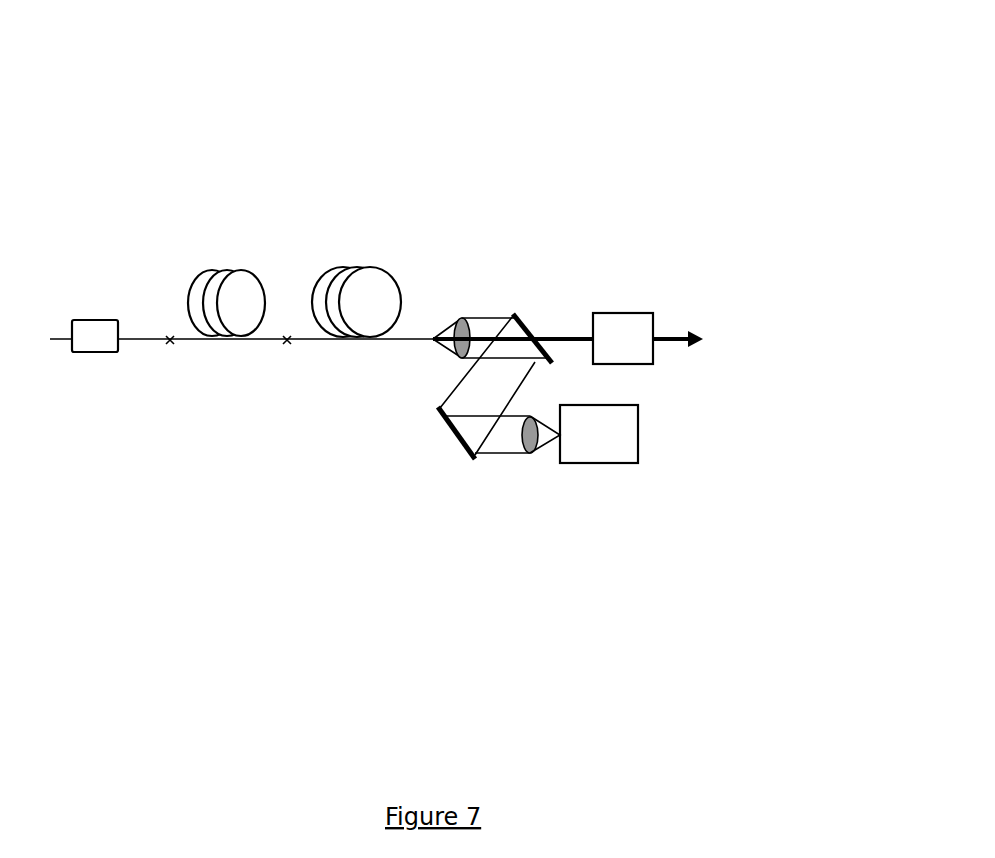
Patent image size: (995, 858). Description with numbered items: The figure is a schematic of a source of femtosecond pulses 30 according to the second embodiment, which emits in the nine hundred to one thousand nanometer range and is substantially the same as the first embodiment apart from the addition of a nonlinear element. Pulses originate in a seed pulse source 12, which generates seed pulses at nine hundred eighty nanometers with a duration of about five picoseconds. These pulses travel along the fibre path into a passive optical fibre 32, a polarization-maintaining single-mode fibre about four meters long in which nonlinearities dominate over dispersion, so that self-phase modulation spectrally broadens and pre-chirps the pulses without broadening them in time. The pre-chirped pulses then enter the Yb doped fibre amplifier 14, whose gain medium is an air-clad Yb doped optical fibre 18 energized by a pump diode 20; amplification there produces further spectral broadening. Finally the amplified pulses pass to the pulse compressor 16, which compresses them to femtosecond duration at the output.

The source of femtosecond pulses 30 is at (459, 88).
The seed pulse source 12 is at (85, 352).
The passive optical fibre 32 is at (205, 270).
The Yb doped optical fibre 18 is at (333, 268).
The Yb doped fibre amplifier 14 is at (442, 262).
The pulse compressor 16 is at (633, 320).
The pump diode 20 is at (602, 465).